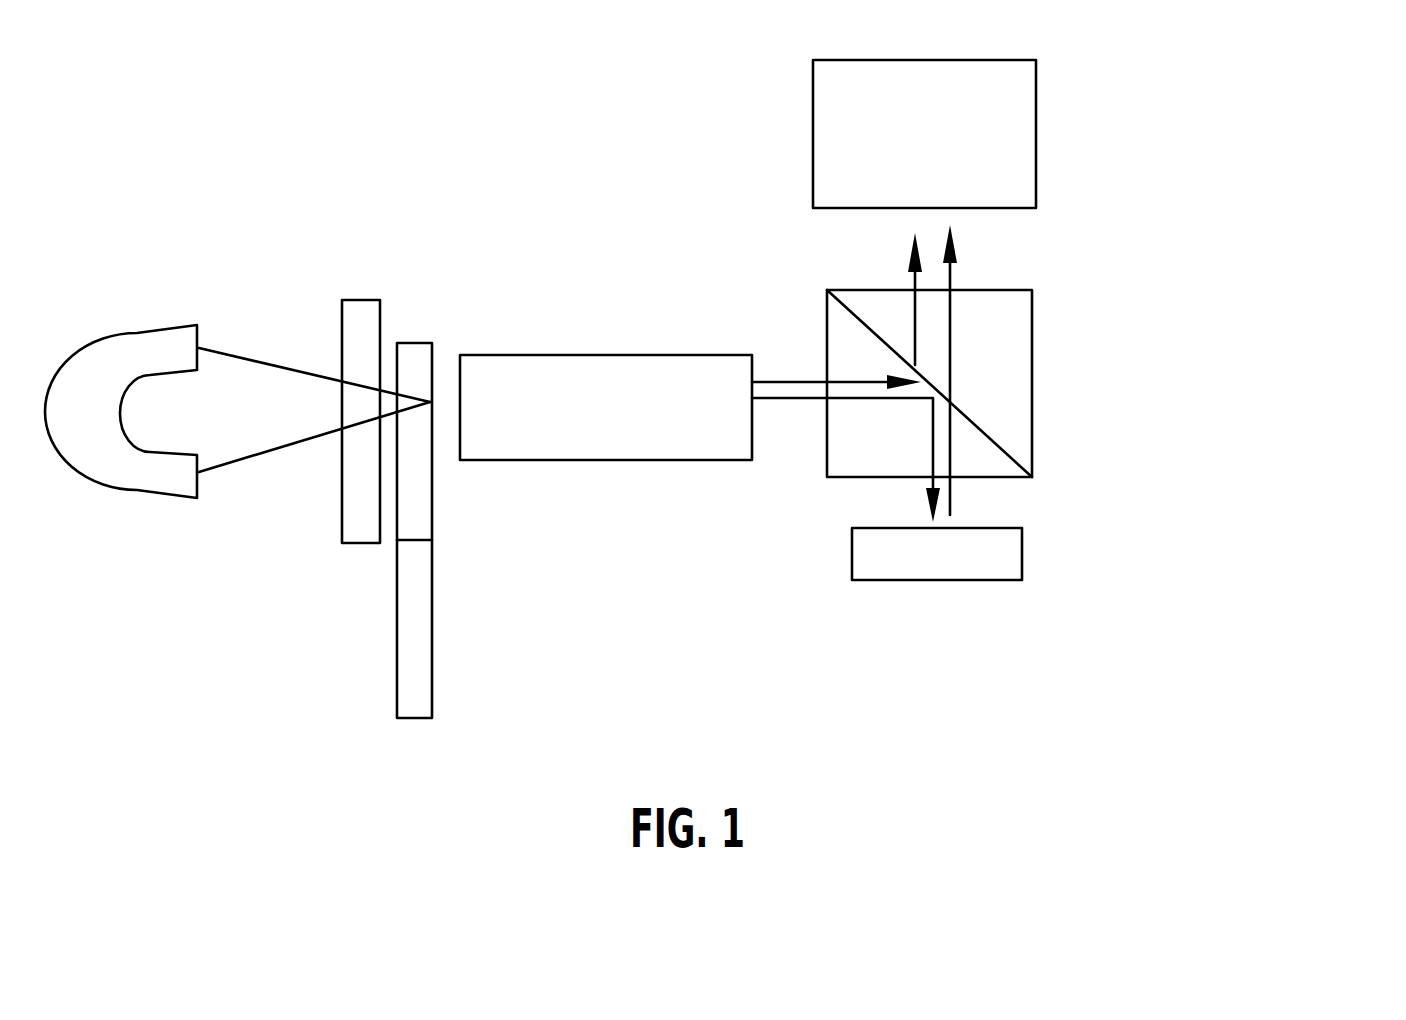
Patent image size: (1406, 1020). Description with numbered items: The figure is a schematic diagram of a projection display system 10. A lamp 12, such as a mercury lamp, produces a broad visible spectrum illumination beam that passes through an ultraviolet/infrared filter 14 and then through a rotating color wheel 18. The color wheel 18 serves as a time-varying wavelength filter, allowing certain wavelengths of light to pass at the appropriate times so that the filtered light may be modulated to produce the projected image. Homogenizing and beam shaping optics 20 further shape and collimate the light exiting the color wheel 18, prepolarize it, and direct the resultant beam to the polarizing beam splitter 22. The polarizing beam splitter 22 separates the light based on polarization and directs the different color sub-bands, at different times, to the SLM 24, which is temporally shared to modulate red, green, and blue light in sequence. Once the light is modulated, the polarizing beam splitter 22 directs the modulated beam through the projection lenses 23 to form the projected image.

The projection display system 10 is at (1290, 254).
The lamp 12 is at (150, 383).
The ultraviolet/infrared filter 14 is at (284, 449).
The color wheel 18 is at (470, 627).
The homogenizing and beam shaping optics 20 is at (606, 435).
The polarizing beam splitter 22 is at (990, 383).
The projection lenses 23 is at (982, 134).
The spatial light modulator 24 is at (994, 533).